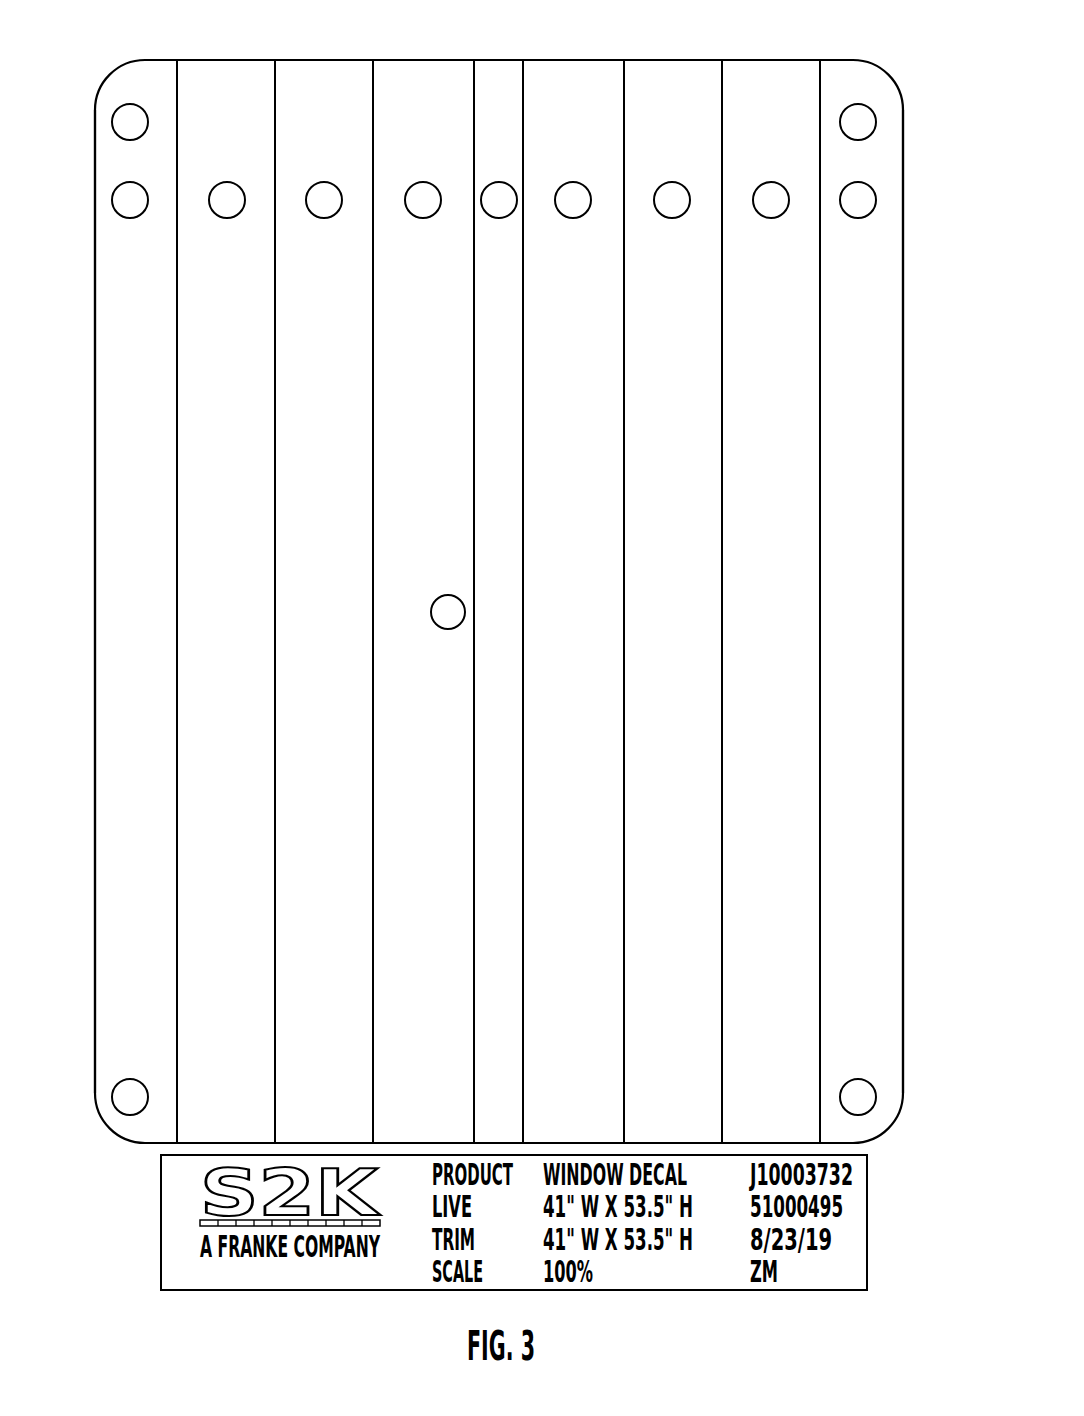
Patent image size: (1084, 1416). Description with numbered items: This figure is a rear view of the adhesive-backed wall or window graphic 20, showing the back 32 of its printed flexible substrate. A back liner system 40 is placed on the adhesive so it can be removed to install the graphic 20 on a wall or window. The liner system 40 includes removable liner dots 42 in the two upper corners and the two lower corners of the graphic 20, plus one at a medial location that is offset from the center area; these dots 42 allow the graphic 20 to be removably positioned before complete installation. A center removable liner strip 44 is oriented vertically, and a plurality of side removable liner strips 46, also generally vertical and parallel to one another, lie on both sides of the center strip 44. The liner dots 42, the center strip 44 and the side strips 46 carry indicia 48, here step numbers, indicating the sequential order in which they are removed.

The adhesive-backed wall or window graphic 20 is at (782, 58).
The back 32 is at (890, 558).
The back liner system 40 is at (97, 647).
The removable liner dots 42 is at (148, 118).
The center removable liner strip 44 is at (500, 88).
The side removable liner strips 46 is at (871, 739).
The indicia 48 is at (504, 585).